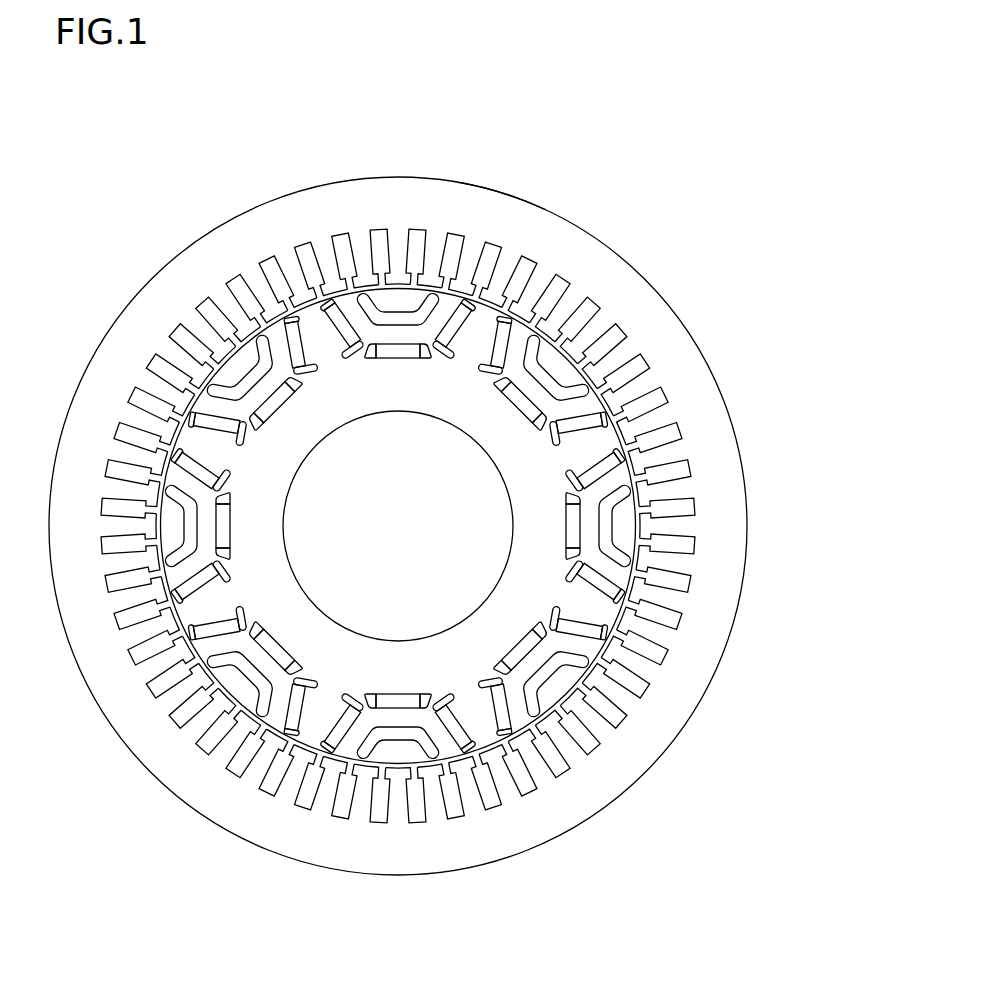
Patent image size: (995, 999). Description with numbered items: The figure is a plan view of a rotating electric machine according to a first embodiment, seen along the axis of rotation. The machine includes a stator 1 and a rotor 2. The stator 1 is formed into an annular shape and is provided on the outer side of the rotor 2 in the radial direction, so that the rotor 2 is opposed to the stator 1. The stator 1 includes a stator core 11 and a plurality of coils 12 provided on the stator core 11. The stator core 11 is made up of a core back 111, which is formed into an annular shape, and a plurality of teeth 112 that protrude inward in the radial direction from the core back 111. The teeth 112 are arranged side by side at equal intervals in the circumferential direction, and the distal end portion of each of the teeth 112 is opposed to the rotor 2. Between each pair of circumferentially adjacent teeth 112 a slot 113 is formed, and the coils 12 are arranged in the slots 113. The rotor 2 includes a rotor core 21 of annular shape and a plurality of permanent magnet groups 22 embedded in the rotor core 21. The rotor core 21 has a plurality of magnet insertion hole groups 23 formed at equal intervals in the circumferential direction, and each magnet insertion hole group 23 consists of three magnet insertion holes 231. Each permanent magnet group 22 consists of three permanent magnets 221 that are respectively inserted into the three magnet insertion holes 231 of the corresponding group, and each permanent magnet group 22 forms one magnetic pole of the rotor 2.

The stator 1 is at (399, 188).
The stator core 11 is at (317, 195).
The core back 111 is at (485, 203).
The teeth 112 is at (505, 268).
The slots 113 is at (528, 278).
The coils 12 is at (269, 264).
The rotor 2 is at (398, 757).
The rotor core 21 is at (483, 740).
The permanent magnet groups 22 is at (345, 725).
The permanent magnets 221 is at (207, 636).
The magnet insertion hole groups 23 is at (464, 758).
The magnet insertion holes 231 is at (503, 730).